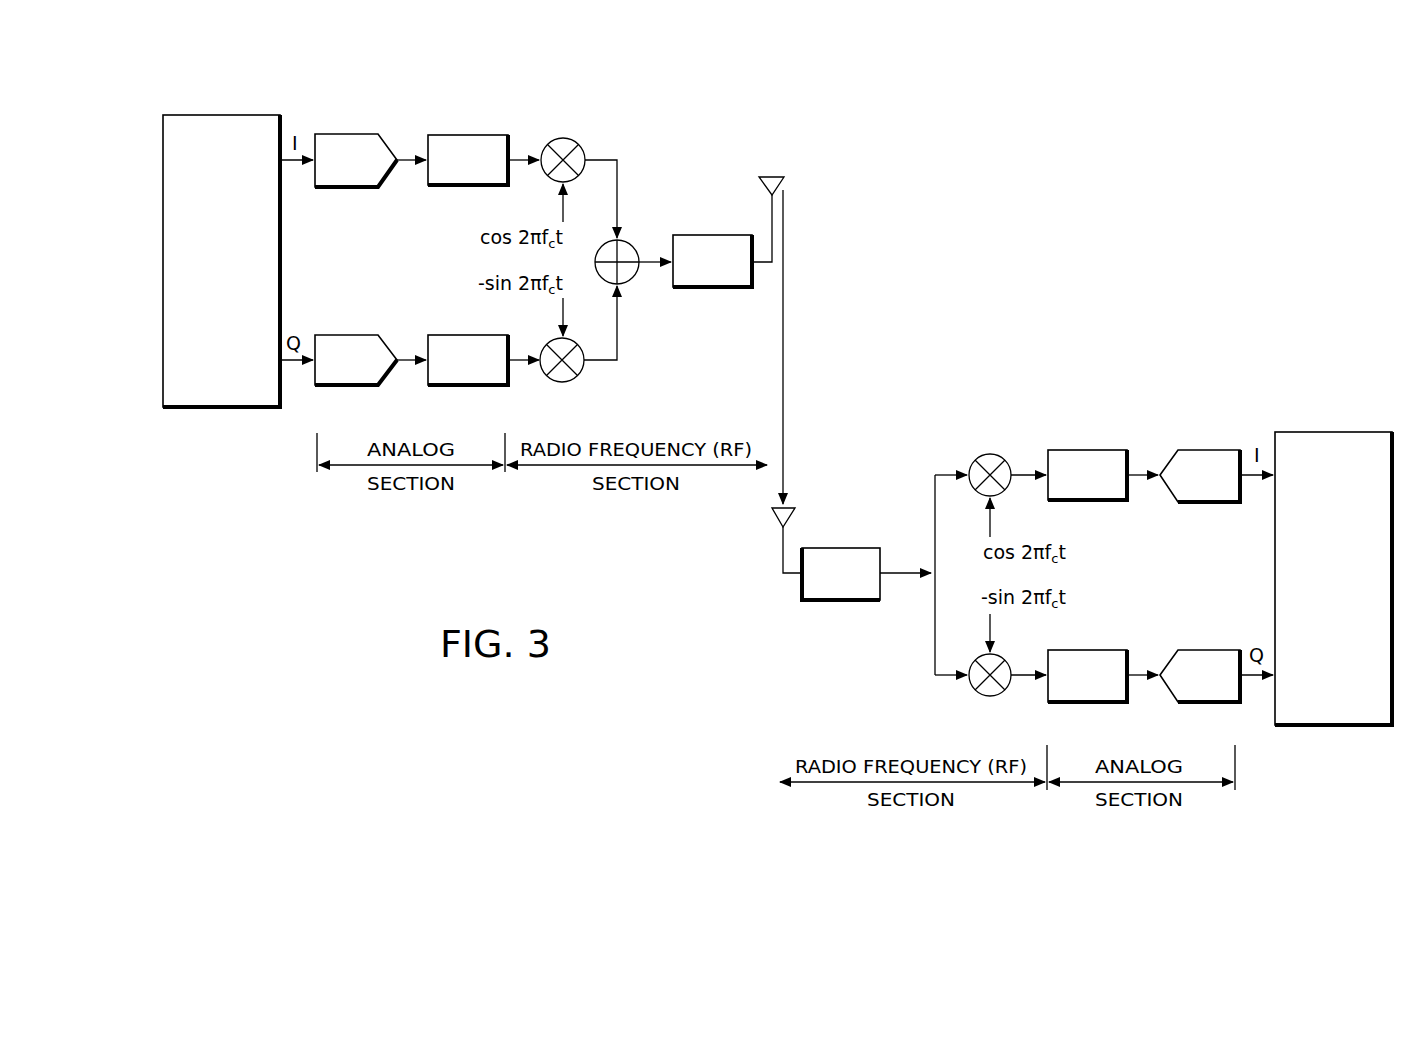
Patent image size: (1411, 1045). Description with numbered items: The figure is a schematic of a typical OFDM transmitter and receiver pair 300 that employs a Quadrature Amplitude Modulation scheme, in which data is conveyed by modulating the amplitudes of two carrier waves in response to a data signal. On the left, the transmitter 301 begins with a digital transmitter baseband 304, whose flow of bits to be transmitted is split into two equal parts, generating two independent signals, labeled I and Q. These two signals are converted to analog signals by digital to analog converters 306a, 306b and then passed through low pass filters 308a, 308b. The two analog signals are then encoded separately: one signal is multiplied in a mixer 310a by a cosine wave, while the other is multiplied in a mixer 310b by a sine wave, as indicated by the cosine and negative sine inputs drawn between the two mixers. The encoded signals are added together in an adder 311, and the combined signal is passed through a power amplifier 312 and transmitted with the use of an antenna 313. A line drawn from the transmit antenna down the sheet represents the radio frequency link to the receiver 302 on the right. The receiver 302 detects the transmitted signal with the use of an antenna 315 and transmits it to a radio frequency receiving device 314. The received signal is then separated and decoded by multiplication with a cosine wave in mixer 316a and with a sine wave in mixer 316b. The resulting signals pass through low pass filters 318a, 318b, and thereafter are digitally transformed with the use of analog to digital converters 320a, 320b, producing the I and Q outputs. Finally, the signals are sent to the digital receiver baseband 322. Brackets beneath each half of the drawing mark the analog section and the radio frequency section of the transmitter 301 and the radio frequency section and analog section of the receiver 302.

The OFDM transmitter and receiver pair 300 is at (338, 72).
The transmitter 301 is at (547, 63).
The receiver 302 is at (1163, 380).
The digital transmitter baseband 304 is at (218, 113).
The digital to analog converter 306a is at (337, 133).
The digital to analog converter 306b is at (350, 387).
The low pass filter 308a is at (465, 134).
The low pass filter 308b is at (468, 387).
The mixer 310a is at (560, 136).
The mixer 310b is at (562, 382).
The adder 311 is at (633, 248).
The power amplifier 312 is at (715, 235).
The antenna 313 is at (766, 175).
The radio frequency receiving device 314 is at (839, 548).
The antenna 315 is at (794, 517).
The cosine wave multiplier 316a is at (989, 454).
The sine wave multiplier 316b is at (990, 697).
The low pass filter 318a is at (1084, 449).
The low pass filter 318b is at (1087, 704).
The analog to digital converter 320a is at (1207, 449).
The analog to digital converter 320b is at (1210, 704).
The digital receiver baseband 322 is at (1330, 431).